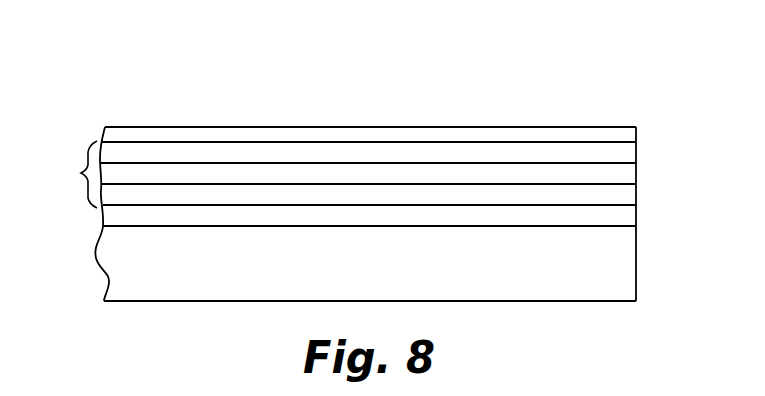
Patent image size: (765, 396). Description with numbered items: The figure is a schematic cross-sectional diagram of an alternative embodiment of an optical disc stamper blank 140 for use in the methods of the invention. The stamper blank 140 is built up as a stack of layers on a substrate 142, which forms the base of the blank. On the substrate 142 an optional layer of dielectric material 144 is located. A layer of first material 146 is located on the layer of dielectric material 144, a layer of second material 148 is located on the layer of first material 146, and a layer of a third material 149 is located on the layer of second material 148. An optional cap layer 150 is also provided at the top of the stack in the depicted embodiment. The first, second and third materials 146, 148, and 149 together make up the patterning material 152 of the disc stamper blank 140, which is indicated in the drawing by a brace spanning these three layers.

The optical disc stamper blank 140 is at (559, 70).
The substrate 142 is at (628, 280).
The layer of dielectric material 144 is at (628, 216).
The layer of first material 146 is at (627, 193).
The layer of second material 148 is at (625, 173).
The layer of third material 149 is at (625, 151).
The cap layer 150 is at (630, 132).
The patterning material 152 is at (66, 174).